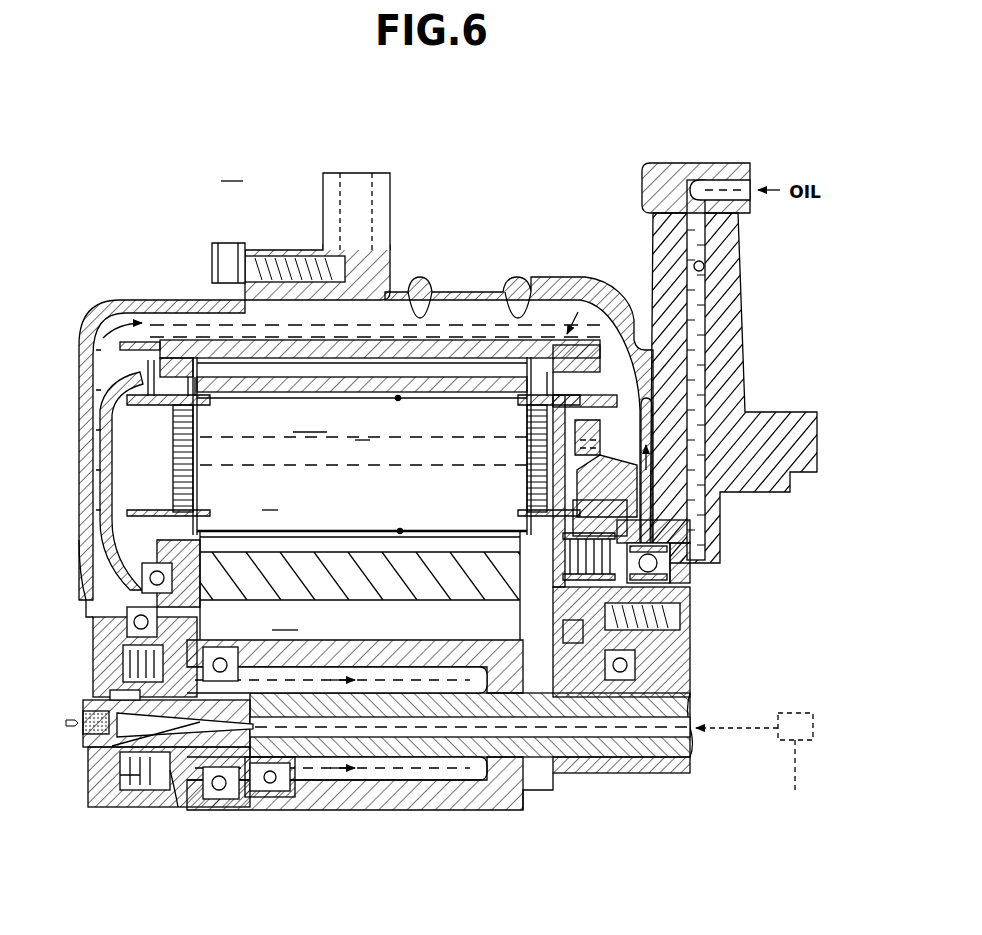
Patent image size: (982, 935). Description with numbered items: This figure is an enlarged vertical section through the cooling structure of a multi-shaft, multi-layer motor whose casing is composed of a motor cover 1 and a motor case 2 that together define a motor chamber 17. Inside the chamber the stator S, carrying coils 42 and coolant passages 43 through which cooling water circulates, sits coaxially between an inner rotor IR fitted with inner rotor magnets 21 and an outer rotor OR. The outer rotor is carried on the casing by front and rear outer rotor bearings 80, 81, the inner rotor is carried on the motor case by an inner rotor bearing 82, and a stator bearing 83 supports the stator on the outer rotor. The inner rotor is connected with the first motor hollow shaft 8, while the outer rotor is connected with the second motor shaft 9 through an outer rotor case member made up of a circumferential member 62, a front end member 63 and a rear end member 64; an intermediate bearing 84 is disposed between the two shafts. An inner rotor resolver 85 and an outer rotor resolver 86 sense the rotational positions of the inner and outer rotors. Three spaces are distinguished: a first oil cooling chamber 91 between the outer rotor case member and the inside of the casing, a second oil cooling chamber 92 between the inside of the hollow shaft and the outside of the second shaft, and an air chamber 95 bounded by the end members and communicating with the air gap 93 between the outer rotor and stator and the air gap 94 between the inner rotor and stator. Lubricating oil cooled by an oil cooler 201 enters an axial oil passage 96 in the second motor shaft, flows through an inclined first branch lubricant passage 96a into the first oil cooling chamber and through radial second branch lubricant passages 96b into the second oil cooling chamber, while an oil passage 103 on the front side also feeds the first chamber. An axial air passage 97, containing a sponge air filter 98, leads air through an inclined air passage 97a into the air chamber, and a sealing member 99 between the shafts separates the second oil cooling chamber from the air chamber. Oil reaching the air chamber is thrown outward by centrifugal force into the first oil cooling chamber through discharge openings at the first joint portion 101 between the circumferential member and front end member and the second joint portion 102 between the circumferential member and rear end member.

The motor cover 1 is at (205, 298).
The motor case 2 is at (445, 295).
The first motor hollow shaft 8 is at (497, 810).
The second motor shaft 9 is at (682, 740).
The motor chamber 17 is at (515, 300).
The inner rotor magnets 21 is at (372, 585).
The coils 42 is at (195, 428).
The coolant passages 43 is at (365, 440).
The circumferential member 62 is at (478, 348).
The front end member 63 is at (700, 378).
The rear end member 64 is at (85, 347).
The front outer rotor bearing 80 is at (652, 565).
The rear outer rotor bearing 81 is at (135, 622).
The inner rotor bearing 82 is at (665, 662).
The stator bearing 83 is at (150, 580).
The intermediate bearing 84 is at (218, 792).
The inner rotor resolver 85 is at (565, 628).
The outer rotor resolver 86 is at (125, 660).
The first oil cooling chamber 91 is at (410, 320).
The second oil cooling chamber 92 is at (418, 680).
The air gap 93 is at (398, 398).
The air gap 94 is at (400, 531).
The air chamber 95 is at (118, 440).
The axial oil passage 96 is at (600, 737).
The first branch lubricant passage 96a is at (178, 807).
The second branch lubricant passage 96b is at (340, 788).
The axial air passage 97 is at (90, 742).
The inclined air passage 97a is at (160, 785).
The air filter 98 is at (90, 714).
The sealing member 99 is at (268, 797).
The first joint portion 101 is at (575, 318).
The second joint portion 102 is at (157, 338).
The oil passage 103 is at (705, 270).
The oil cooler 201 is at (755, 762).